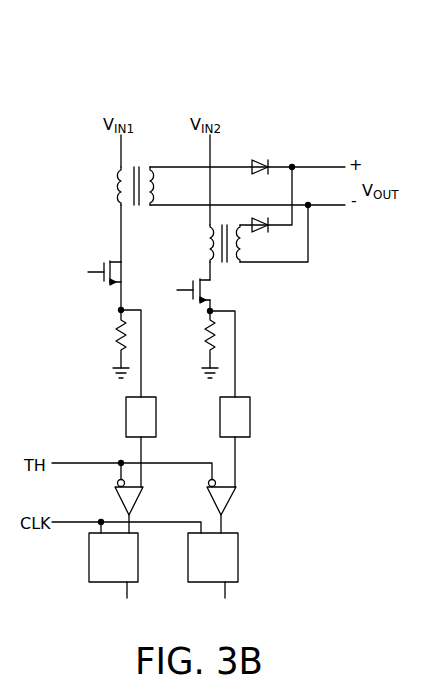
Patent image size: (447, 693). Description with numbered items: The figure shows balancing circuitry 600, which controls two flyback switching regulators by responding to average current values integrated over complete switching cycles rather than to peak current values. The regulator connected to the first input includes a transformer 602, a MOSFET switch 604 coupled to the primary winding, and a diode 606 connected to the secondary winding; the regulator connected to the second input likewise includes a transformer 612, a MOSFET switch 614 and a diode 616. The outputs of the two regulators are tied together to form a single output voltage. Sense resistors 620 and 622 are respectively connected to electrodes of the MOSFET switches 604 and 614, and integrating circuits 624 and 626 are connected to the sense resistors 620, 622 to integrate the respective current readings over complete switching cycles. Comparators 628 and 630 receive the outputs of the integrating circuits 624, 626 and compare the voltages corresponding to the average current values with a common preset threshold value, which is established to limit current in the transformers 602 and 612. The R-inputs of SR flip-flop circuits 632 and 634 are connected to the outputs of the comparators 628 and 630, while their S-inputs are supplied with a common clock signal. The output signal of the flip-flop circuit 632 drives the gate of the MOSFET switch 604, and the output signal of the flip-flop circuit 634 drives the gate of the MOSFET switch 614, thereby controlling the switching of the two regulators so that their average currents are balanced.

The balancing circuitry 600 is at (181, 86).
The transformer 602 is at (113, 184).
The MOSFET switch 604 is at (112, 284).
The diode 606 is at (260, 155).
The transformer 612 is at (223, 266).
The MOSFET switch 614 is at (203, 275).
The diode 616 is at (264, 240).
The sense resistor 620 is at (118, 349).
The sense resistor 622 is at (218, 338).
The integrating circuit 624 is at (126, 418).
The integrating circuit 626 is at (250, 420).
The comparator 628 is at (118, 505).
The comparator 630 is at (232, 500).
The SR flip-flop circuit 632 is at (89, 558).
The SR flip-flop circuit 634 is at (238, 556).